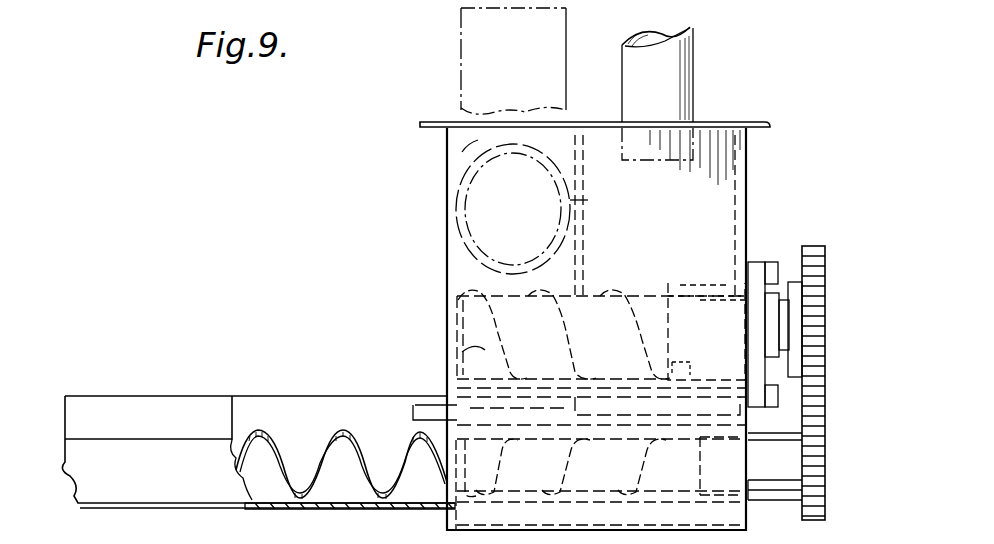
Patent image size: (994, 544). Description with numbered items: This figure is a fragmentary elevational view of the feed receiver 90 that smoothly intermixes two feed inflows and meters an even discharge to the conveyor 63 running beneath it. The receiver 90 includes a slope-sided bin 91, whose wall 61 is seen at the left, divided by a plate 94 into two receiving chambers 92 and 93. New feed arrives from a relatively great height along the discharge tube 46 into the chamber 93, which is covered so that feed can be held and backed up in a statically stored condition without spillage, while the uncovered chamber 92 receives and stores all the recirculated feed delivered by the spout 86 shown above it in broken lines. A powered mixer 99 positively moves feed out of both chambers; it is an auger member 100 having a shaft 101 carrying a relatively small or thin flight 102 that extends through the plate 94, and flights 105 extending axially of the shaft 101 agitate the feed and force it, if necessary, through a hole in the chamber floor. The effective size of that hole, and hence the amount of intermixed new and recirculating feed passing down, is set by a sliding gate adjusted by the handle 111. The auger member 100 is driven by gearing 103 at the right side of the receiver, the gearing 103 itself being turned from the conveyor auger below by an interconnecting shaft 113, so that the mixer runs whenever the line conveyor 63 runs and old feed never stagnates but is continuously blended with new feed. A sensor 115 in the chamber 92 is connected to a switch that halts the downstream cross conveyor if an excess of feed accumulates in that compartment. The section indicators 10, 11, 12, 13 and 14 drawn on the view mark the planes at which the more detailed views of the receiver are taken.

The section line 10- 10 is at (470, 71).
The section line 11- 11 is at (345, 160).
The section line 12- 12 is at (475, 263).
The section line 13- 13 is at (668, 445).
The section line 14- 14 is at (570, 392).
The discharge tube 46 is at (693, 32).
The housing 61 is at (430, 225).
The conveyor 63 is at (258, 398).
The spout 86 is at (556, 58).
The feed receiver 90 is at (432, 319).
The slope-sided bin 91 is at (465, 150).
The receiving chamber 92 is at (552, 158).
The receiving chamber 93 is at (690, 195).
The plate 94 is at (590, 198).
The powered mixer 99 is at (728, 244).
The auger member 100 is at (462, 352).
The shaft 101 is at (608, 338).
The flight 102 is at (635, 217).
The gearing 103 is at (825, 375).
The flights 105 is at (680, 285).
The handle 111 is at (422, 424).
The interconnecting shaft 113 is at (728, 468).
The sensor 115 is at (528, 213).